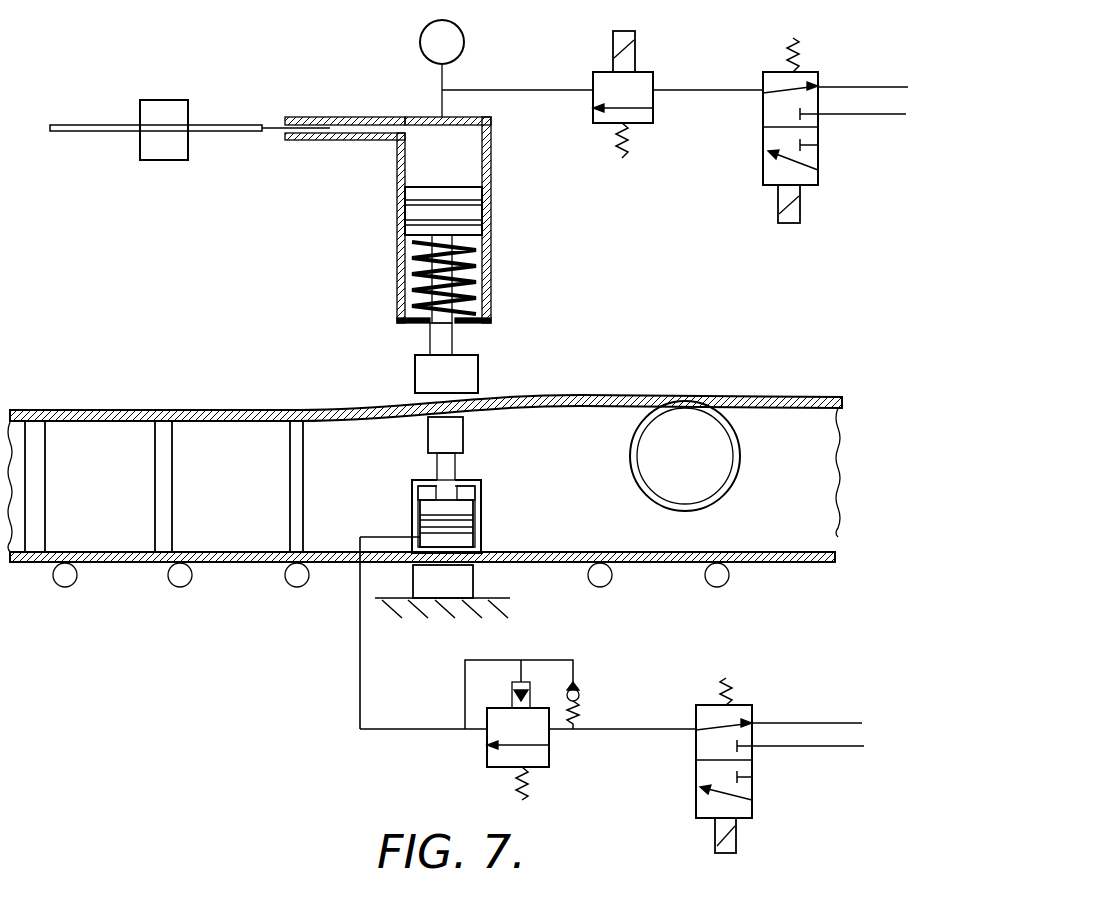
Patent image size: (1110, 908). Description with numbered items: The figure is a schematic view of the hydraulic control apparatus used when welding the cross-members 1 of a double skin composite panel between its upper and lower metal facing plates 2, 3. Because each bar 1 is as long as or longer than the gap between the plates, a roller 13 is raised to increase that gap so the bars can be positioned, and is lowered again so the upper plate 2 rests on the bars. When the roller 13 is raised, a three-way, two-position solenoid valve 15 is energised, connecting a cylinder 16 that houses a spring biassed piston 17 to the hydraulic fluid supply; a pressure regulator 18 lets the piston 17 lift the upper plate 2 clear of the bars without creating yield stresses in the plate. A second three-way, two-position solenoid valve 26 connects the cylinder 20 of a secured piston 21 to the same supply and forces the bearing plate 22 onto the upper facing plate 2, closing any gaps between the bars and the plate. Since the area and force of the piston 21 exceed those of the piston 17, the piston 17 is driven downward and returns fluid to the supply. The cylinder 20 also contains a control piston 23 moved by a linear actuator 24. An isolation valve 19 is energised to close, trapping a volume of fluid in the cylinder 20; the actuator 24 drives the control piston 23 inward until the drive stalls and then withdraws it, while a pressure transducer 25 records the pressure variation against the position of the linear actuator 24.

The cross-member 1 is at (290, 440).
The upper facing plate 2 is at (571, 392).
The lower facing plate 3 is at (262, 562).
The roller 13 is at (735, 428).
The three-way, two-position solenoid valve 15 is at (740, 805).
The cylinder 16 is at (420, 540).
The spring biassed piston 17 is at (470, 522).
The pressure regulator 18 is at (540, 755).
The isolation valve 19 is at (640, 88).
The cylinder 20 is at (460, 166).
The secured piston 21 is at (413, 193).
The bearing plate 22 is at (425, 372).
The control piston 23 is at (322, 128).
The linear actuator 24 is at (173, 108).
The pressure transducer 25 is at (463, 40).
The second three-way, two-position solenoid valve 26 is at (805, 172).